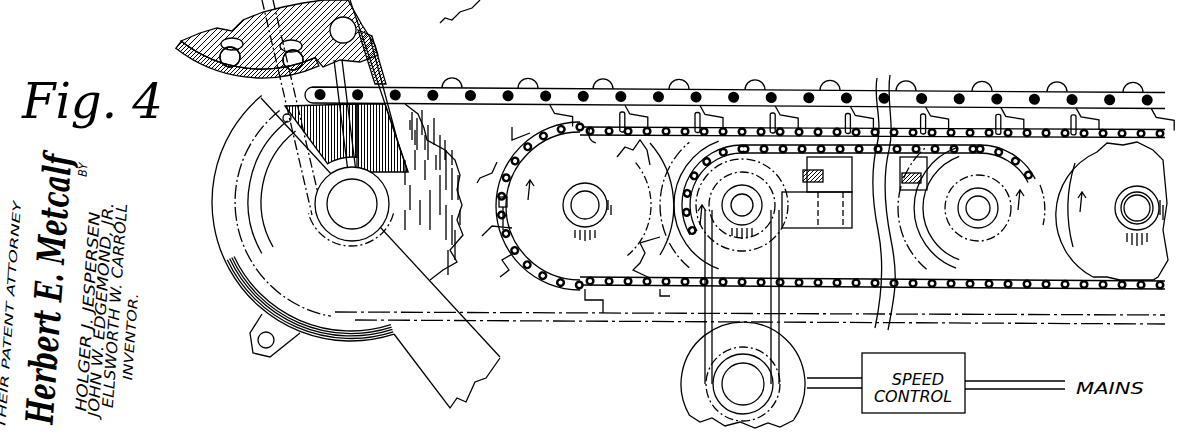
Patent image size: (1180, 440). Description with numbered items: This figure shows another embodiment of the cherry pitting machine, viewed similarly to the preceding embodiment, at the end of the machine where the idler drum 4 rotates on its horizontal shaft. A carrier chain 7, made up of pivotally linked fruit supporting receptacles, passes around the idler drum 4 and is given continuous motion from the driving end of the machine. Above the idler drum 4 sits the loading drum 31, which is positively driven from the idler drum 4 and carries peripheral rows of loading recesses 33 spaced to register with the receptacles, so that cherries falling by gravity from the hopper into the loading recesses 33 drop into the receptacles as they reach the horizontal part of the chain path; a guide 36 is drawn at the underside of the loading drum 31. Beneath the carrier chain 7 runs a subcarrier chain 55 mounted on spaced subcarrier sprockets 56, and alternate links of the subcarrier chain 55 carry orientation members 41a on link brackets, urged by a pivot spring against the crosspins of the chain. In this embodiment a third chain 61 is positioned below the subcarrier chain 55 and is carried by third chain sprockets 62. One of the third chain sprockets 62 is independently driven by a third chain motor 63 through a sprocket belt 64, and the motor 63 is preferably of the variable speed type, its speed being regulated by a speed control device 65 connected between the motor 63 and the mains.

The idler drum 4 is at (360, 118).
The carrier chain 7 is at (670, 78).
The loading drum 31 is at (262, 33).
The loading recesses 33 is at (215, 38).
The guide rail 36 is at (252, 78).
The orientation member 41a is at (678, 117).
The subcarrier chain 55 is at (703, 138).
The subcarrier sprocket 56 is at (1146, 174).
The third chain 61 is at (876, 82).
The third chain sprocket 62 is at (757, 171).
The third chain motor 63 is at (700, 386).
The sprocket belt 64 is at (703, 312).
The speed control device 65 is at (968, 392).